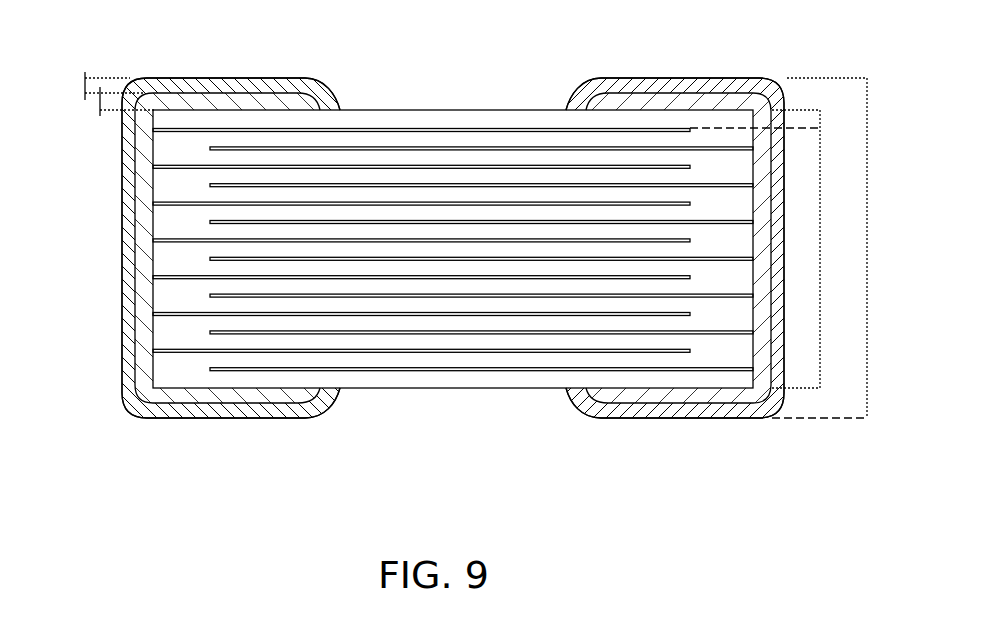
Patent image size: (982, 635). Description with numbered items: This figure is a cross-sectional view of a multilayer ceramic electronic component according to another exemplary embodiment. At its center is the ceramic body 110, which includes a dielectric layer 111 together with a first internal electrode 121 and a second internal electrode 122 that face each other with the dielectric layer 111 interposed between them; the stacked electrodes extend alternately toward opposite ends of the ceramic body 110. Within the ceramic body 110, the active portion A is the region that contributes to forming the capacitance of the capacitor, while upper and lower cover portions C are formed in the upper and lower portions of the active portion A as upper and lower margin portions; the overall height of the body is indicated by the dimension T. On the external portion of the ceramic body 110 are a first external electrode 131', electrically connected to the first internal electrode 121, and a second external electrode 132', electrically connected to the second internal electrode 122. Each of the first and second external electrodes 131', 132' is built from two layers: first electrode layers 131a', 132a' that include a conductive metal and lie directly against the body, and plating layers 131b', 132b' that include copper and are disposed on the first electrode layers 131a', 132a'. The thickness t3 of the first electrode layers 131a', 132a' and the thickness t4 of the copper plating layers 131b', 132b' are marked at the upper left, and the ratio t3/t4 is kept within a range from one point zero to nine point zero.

The ceramic body 110 is at (478, 110).
The dielectric layer 111 is at (168, 292).
The first internal electrode 121 is at (153, 153).
The second internal electrode 122 is at (219, 150).
The first external electrode 131' is at (231, 300).
The first electrode layer 131a' is at (334, 273).
The plating layer 131b' is at (350, 273).
The second external electrode 132' is at (675, 300).
The first electrode layer 132a' is at (594, 273).
The plating layer 132b' is at (610, 273).
The thickness of the first electrode layers t3 is at (100, 101).
The thickness of the plating layers t4 is at (85, 88).
The cover portion C is at (766, 252).
The active portion A is at (807, 249).
The total thickness T is at (830, 248).